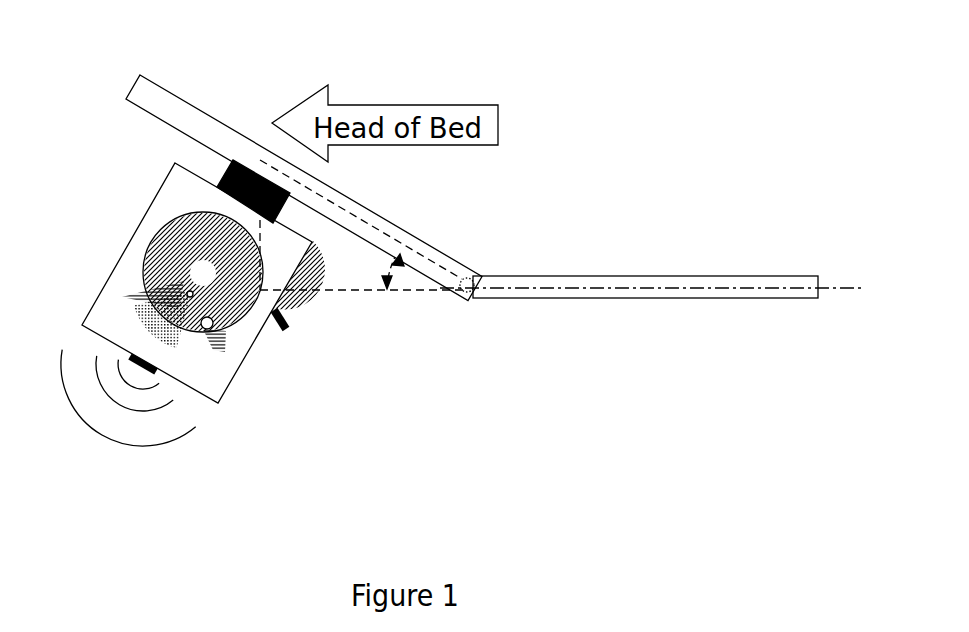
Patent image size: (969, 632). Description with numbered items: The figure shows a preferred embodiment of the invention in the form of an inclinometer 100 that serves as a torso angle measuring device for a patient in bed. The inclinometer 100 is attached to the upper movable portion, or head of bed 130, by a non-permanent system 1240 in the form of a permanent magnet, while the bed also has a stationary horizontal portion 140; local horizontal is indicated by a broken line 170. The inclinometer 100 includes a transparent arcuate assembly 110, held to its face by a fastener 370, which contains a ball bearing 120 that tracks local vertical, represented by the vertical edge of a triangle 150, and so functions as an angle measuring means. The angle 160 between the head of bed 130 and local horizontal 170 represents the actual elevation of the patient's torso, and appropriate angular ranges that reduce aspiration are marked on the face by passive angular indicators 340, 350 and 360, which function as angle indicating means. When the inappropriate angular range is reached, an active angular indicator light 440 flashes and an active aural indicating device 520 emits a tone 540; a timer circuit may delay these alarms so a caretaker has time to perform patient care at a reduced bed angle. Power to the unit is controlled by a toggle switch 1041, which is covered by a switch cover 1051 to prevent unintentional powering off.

The inclinometer 100 is at (229, 389).
The transparent arcuate assembly 110 is at (193, 265).
The ball bearing 120 is at (212, 328).
The head of bed 130 is at (440, 242).
The stationary horizontal portion 140 is at (585, 275).
The triangle 150 is at (363, 290).
The angular range 160 is at (397, 260).
The local horizontal 170 is at (840, 288).
The passive angular indicator 340 is at (207, 230).
The passive angular indicator 350 is at (207, 330).
The passive angular indicator 360 is at (183, 312).
The fastener 370 is at (187, 283).
The active angular indicator light 440 is at (187, 292).
The active aural indicating device 520 is at (141, 377).
The tone 540 is at (93, 400).
The toggle switch 1041 is at (283, 333).
The switch cover 1051 is at (308, 327).
The non-permanent system 1240 is at (240, 160).